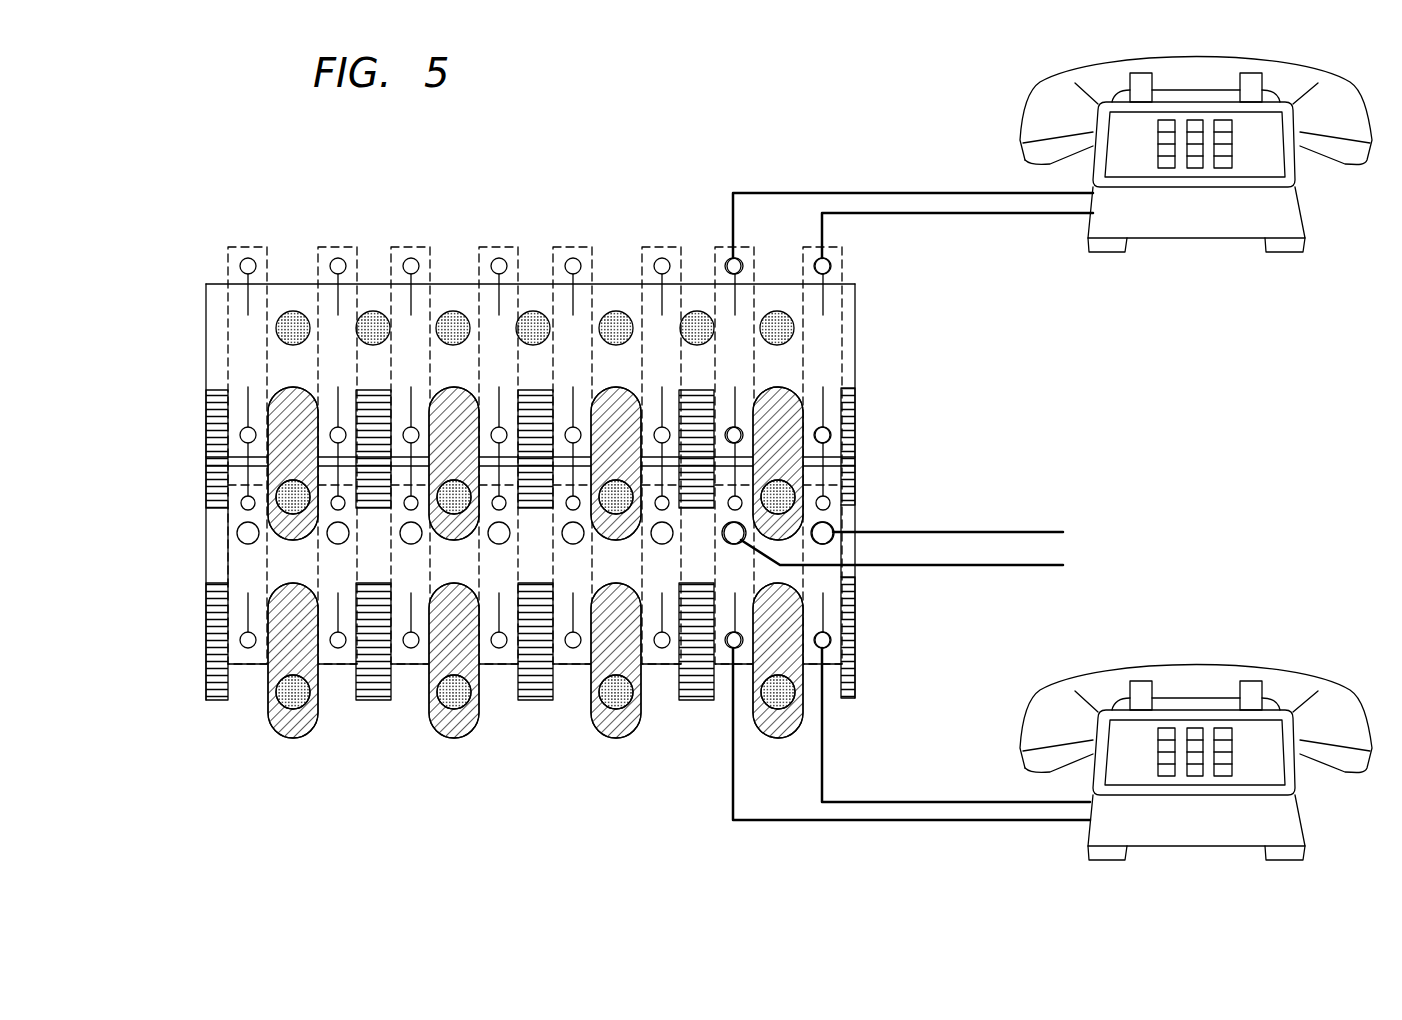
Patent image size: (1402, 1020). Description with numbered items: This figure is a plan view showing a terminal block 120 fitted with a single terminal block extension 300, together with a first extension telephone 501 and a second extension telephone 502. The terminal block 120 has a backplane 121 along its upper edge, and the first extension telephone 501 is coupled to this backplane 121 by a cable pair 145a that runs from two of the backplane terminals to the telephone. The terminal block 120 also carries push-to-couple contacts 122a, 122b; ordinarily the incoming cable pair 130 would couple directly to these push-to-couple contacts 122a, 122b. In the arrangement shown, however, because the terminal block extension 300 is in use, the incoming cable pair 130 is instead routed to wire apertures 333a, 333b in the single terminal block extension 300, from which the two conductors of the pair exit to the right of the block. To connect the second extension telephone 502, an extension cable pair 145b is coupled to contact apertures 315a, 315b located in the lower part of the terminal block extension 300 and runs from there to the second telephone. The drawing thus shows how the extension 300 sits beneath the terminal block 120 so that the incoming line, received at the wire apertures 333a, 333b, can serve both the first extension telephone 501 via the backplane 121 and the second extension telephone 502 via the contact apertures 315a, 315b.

The terminal block 120 is at (166, 375).
The terminal block extension 300 is at (166, 565).
The backplane 121 is at (872, 244).
The push-to-couple contact 122a is at (831, 434).
The push-to-couple contact 122b is at (741, 431).
The wire aperture 333a is at (833, 526).
The wire aperture 333b is at (731, 539).
The contact aperture 315a is at (831, 640).
The contact aperture 315b is at (730, 648).
The incoming cable pair 130 is at (1073, 513).
The extension cable pair 145a is at (887, 184).
The extension cable pair 145b is at (911, 831).
The first extension telephone 501 is at (1195, 233).
The second extension telephone 502 is at (1198, 665).